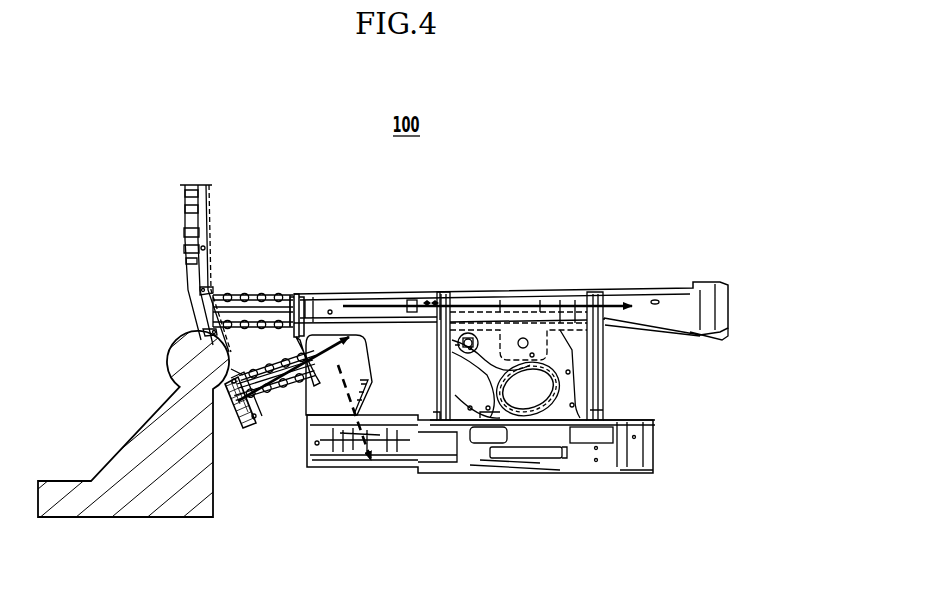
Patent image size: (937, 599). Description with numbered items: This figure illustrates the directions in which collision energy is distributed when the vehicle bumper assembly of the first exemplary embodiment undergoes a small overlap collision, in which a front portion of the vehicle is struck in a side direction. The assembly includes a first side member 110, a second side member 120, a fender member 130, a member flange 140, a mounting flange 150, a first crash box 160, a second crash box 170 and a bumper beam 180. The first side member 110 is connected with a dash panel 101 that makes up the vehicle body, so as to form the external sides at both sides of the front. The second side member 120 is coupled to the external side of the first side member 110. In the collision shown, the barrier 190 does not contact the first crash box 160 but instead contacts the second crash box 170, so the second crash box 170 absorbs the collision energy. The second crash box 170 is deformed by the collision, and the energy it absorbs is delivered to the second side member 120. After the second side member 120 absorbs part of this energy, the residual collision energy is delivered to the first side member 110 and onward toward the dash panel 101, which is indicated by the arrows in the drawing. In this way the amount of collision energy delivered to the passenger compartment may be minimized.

The dash panel 101 is at (407, 446).
The first side member 110 is at (362, 302).
The second side member 120 is at (350, 372).
The fender member 130 is at (437, 302).
The member flange 140 is at (297, 330).
The mounting flange 150 is at (283, 328).
The first crash box 160 is at (231, 313).
The second crash box 170 is at (270, 388).
The bumper beam 180 is at (187, 270).
The barrier 190 is at (143, 443).